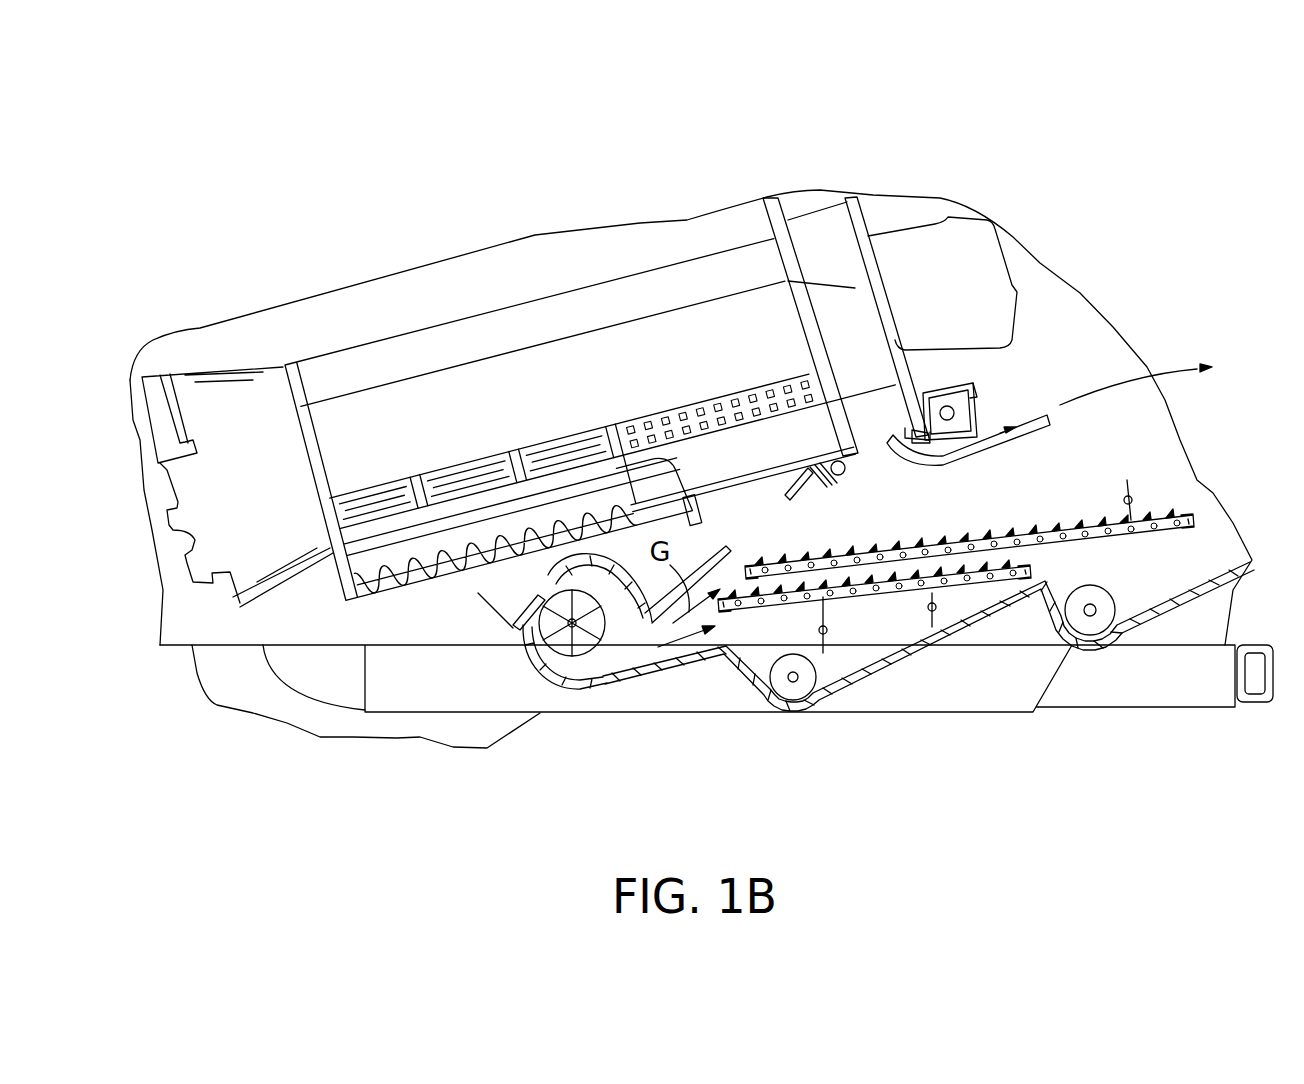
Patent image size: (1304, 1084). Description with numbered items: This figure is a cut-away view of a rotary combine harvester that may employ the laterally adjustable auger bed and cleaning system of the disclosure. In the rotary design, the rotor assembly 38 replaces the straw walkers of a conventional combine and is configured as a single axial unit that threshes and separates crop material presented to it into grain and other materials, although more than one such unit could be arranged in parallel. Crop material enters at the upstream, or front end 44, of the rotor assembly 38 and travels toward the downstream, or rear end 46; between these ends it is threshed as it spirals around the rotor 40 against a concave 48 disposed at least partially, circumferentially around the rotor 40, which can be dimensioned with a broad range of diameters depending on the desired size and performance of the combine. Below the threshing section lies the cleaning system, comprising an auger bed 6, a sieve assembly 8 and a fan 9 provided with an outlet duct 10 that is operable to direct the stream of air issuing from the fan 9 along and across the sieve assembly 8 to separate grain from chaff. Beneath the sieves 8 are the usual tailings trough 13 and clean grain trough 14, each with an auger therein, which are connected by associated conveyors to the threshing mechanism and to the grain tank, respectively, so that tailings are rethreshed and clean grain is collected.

The auger bed 6 is at (458, 565).
The sieve assembly 8 is at (1067, 523).
The fan 9 is at (594, 655).
The outlet duct 10 is at (707, 667).
The tailings trough 13 is at (1090, 650).
The clean grain trough 14 is at (793, 712).
The rotor assembly 38 is at (863, 227).
The rotor 40 is at (873, 374).
The front end 44 is at (227, 363).
The rear end 46 is at (810, 213).
The concave 48 is at (343, 538).